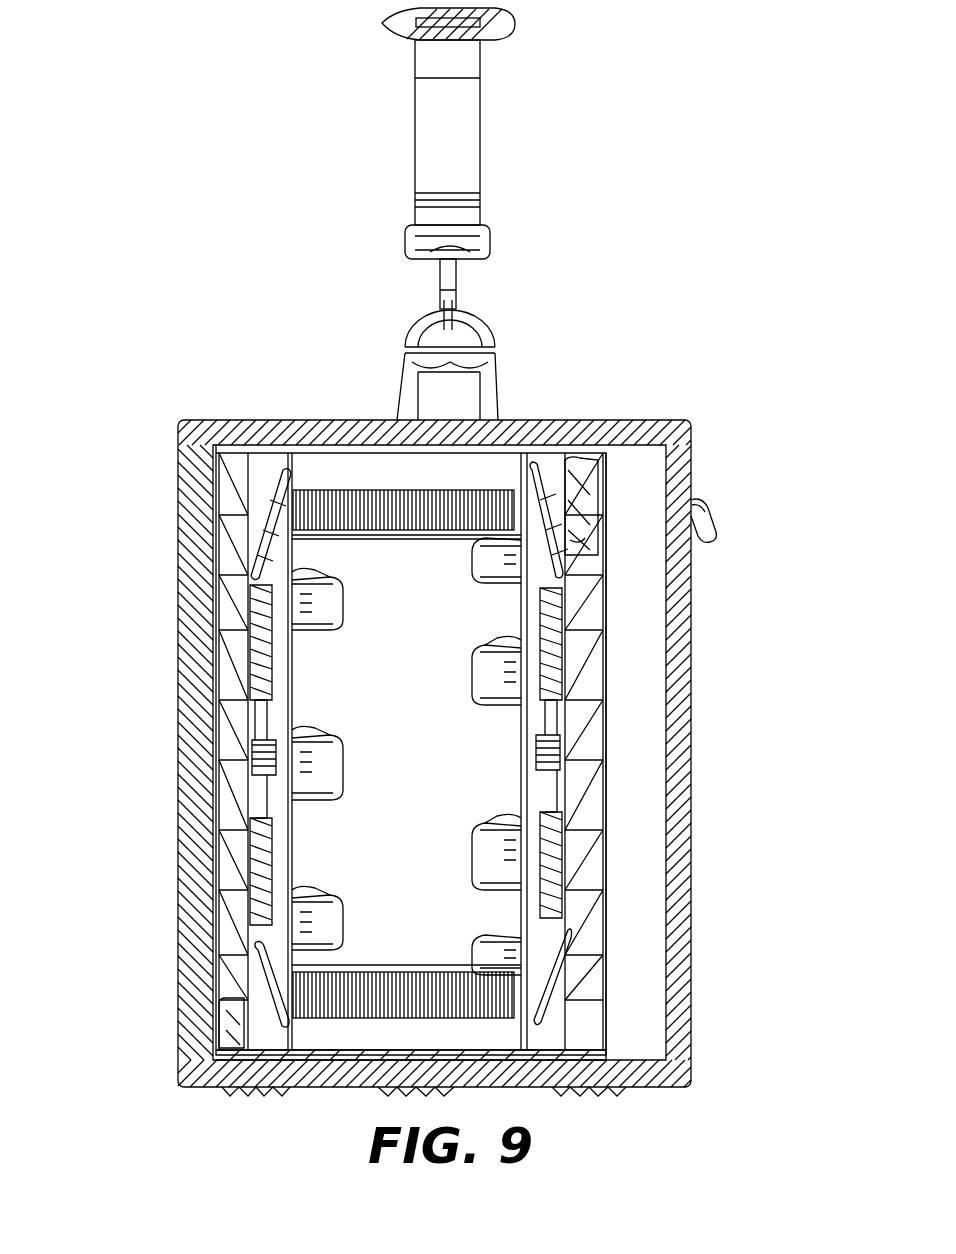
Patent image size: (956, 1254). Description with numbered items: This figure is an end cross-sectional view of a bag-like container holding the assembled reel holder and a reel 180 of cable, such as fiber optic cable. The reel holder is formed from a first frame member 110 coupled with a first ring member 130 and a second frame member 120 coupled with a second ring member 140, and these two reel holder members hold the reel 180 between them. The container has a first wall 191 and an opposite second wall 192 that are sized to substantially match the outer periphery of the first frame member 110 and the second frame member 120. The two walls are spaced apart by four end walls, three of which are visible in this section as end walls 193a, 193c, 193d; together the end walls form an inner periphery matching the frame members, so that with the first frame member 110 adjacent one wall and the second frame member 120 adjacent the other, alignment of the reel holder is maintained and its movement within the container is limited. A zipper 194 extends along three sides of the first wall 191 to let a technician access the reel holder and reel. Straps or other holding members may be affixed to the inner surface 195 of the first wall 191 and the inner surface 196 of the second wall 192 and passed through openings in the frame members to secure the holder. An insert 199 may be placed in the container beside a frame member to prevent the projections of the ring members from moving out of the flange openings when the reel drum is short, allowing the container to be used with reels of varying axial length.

The first frame member 110 is at (600, 421).
The second frame member 120 is at (226, 446).
The first ring member 130 is at (545, 482).
The second ring member 140 is at (284, 520).
The reel 180 is at (428, 780).
The first wall 191 is at (683, 820).
The second wall 192 is at (192, 858).
The end wall 193a is at (575, 422).
The end wall 193c is at (346, 1088).
The end wall 193d is at (356, 466).
The zipper 194 is at (712, 518).
The inner surface 195 is at (648, 1005).
The inner surface 196 is at (232, 1030).
The insert 199 is at (640, 730).